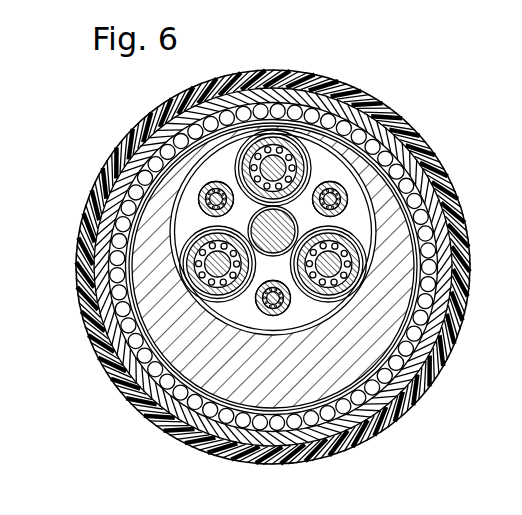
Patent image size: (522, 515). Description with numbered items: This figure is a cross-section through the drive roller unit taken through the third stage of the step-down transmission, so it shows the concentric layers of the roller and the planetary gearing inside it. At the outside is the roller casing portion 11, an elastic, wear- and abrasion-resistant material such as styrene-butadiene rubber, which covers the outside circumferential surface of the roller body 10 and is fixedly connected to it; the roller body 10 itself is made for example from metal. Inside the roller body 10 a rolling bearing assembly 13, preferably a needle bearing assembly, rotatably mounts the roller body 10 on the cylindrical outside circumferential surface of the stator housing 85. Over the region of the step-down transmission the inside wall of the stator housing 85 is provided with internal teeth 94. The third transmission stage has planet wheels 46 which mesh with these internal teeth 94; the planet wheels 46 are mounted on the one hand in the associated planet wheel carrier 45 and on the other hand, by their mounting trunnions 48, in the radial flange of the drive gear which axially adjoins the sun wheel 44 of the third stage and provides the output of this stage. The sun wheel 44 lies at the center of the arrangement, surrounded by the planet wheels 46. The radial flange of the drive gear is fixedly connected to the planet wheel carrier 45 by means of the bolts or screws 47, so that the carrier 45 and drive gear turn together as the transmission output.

The roller body 10 is at (98, 281).
The roller casing portion 11 is at (84, 243).
The rolling bearing assembly 13 is at (100, 319).
The sun wheel 44 is at (285, 253).
The planet wheel carrier 45 is at (160, 113).
The planet wheels 46 is at (258, 140).
The bolts or screws 47 is at (140, 148).
The mounting trunnions 48 is at (288, 140).
The stator housing 85 is at (158, 332).
The internal teeth 94 is at (383, 213).